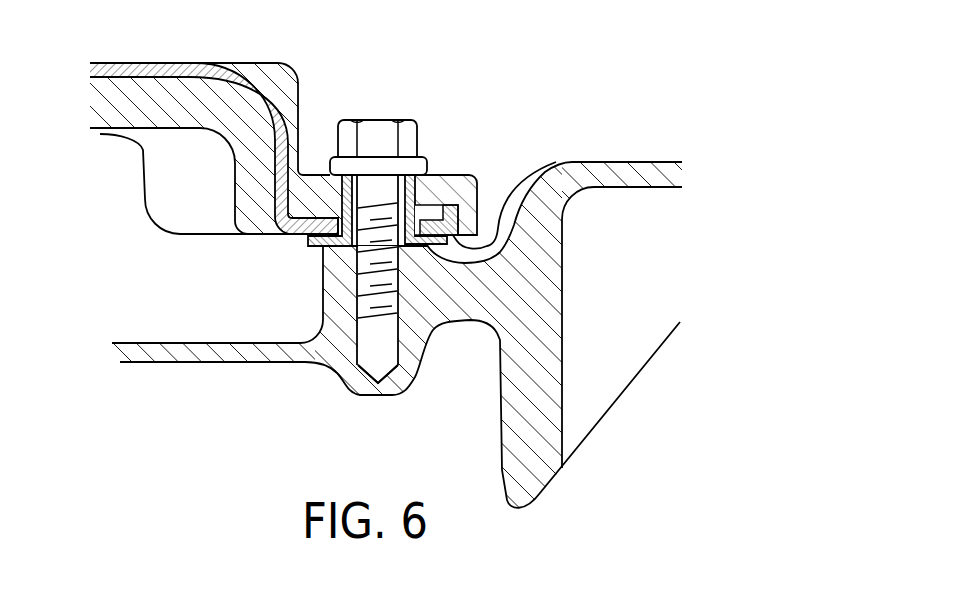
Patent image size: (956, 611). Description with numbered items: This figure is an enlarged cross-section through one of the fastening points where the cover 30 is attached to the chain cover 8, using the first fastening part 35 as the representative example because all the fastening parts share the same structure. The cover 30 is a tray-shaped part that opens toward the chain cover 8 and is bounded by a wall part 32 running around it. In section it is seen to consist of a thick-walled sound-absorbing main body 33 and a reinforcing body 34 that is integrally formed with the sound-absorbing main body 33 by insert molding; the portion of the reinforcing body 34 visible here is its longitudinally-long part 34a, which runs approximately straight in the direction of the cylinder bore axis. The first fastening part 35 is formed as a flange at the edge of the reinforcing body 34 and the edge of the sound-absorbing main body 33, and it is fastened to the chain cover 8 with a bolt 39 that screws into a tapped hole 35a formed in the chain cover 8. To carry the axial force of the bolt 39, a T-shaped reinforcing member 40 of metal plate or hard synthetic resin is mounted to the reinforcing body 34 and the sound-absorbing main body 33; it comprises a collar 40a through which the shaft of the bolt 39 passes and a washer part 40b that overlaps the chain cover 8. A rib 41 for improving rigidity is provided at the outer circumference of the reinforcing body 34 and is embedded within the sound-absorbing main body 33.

The chain cover 8 is at (540, 418).
The cover 30 is at (137, 221).
The wall part 32 is at (232, 189).
The sound-absorbing main body 33 is at (284, 90).
The reinforcing body 34 is at (214, 117).
The longitudinally-long part 34a is at (168, 67).
The first fastening part 35 is at (458, 161).
The tapped hole 35a is at (388, 320).
The bolt 39 is at (373, 127).
The reinforcing member 40 is at (273, 247).
The collar 40a is at (342, 177).
The washer part 40b is at (337, 246).
The rib 41 is at (425, 207).